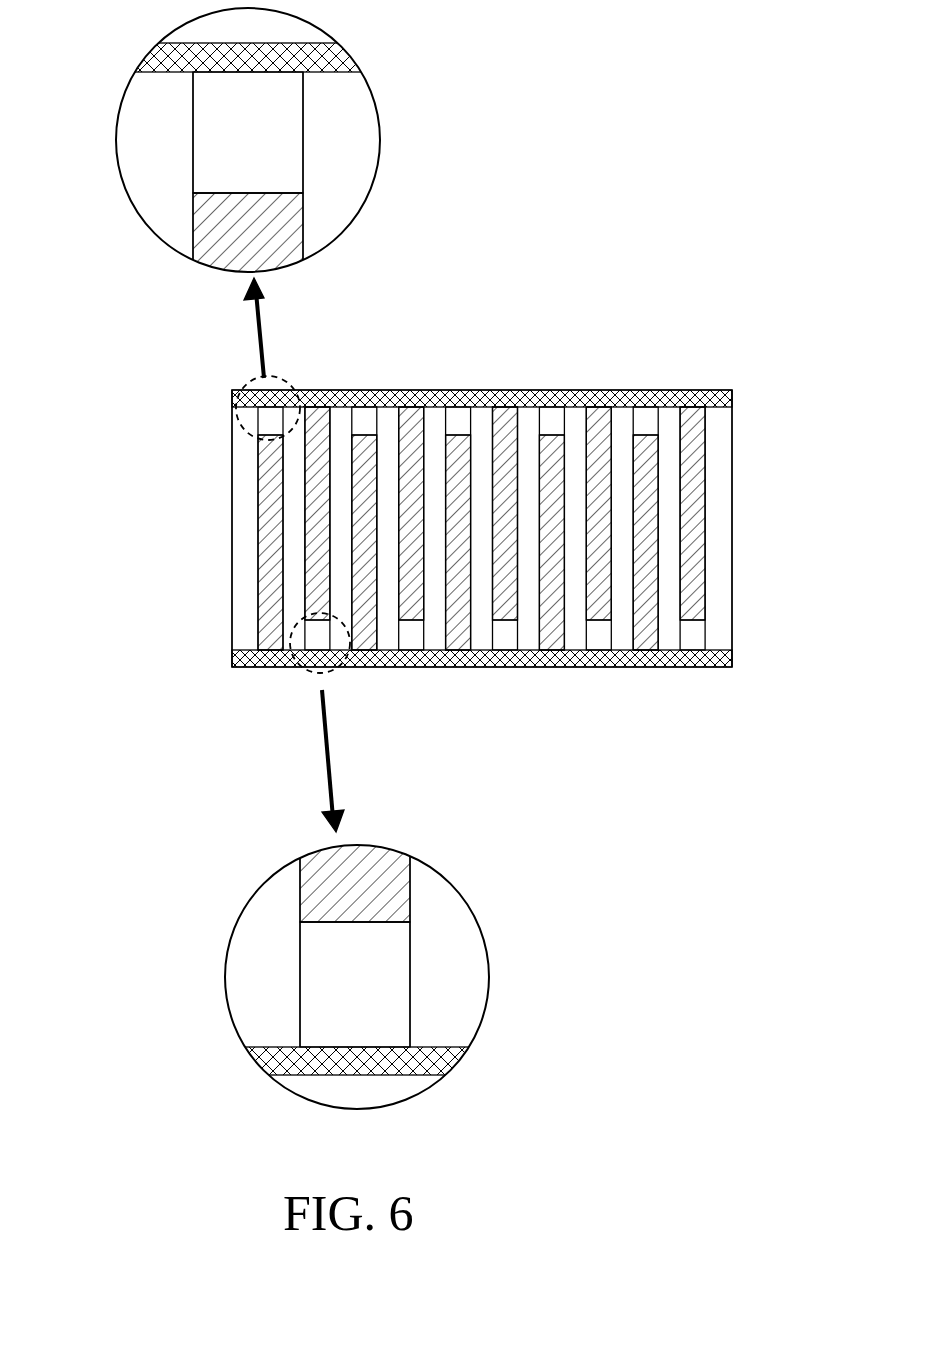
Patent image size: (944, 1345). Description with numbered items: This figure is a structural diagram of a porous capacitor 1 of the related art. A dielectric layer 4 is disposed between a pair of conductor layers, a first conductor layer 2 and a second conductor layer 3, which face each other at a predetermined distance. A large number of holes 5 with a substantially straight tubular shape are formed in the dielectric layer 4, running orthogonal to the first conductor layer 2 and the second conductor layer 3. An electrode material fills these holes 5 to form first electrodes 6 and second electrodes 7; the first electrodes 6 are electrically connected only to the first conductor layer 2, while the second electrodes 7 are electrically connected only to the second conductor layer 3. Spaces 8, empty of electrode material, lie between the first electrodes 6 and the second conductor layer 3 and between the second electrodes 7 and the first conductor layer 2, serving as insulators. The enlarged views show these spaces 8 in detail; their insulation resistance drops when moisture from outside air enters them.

The porous capacitor 1 is at (768, 338).
The first conductor layer 2 is at (733, 396).
The second conductor layer 3 is at (733, 660).
The dielectric layer 4 is at (733, 495).
The holes 5 is at (261, 542).
The first electrodes 6 is at (316, 465).
The second electrodes 7 is at (269, 455).
The spaces 8 is at (301, 559).